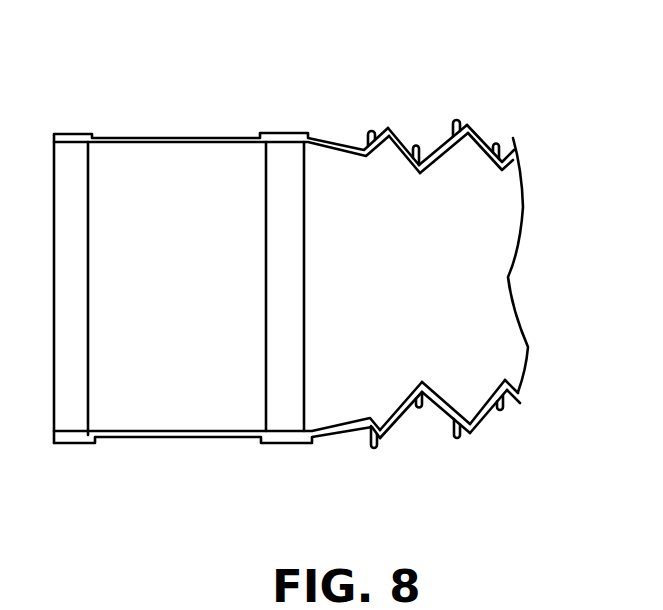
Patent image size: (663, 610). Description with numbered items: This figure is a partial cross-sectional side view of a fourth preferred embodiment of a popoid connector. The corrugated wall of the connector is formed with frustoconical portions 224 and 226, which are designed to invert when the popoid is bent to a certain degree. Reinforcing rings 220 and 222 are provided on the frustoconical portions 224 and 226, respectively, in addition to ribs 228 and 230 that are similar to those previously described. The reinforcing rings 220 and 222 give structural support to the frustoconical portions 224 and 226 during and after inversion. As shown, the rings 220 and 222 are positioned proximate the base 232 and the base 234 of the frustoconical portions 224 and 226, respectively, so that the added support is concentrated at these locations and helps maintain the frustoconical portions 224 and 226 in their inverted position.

The reinforcing ring 220 is at (418, 146).
The reinforcing ring 222 is at (498, 143).
The frustoconical portion 224 is at (405, 137).
The frustoconical portion 226 is at (484, 140).
The rib 228 is at (378, 448).
The rib 230 is at (462, 438).
The base of frustoconical portion 232 is at (404, 397).
The base of frustoconical portion 234 is at (493, 387).